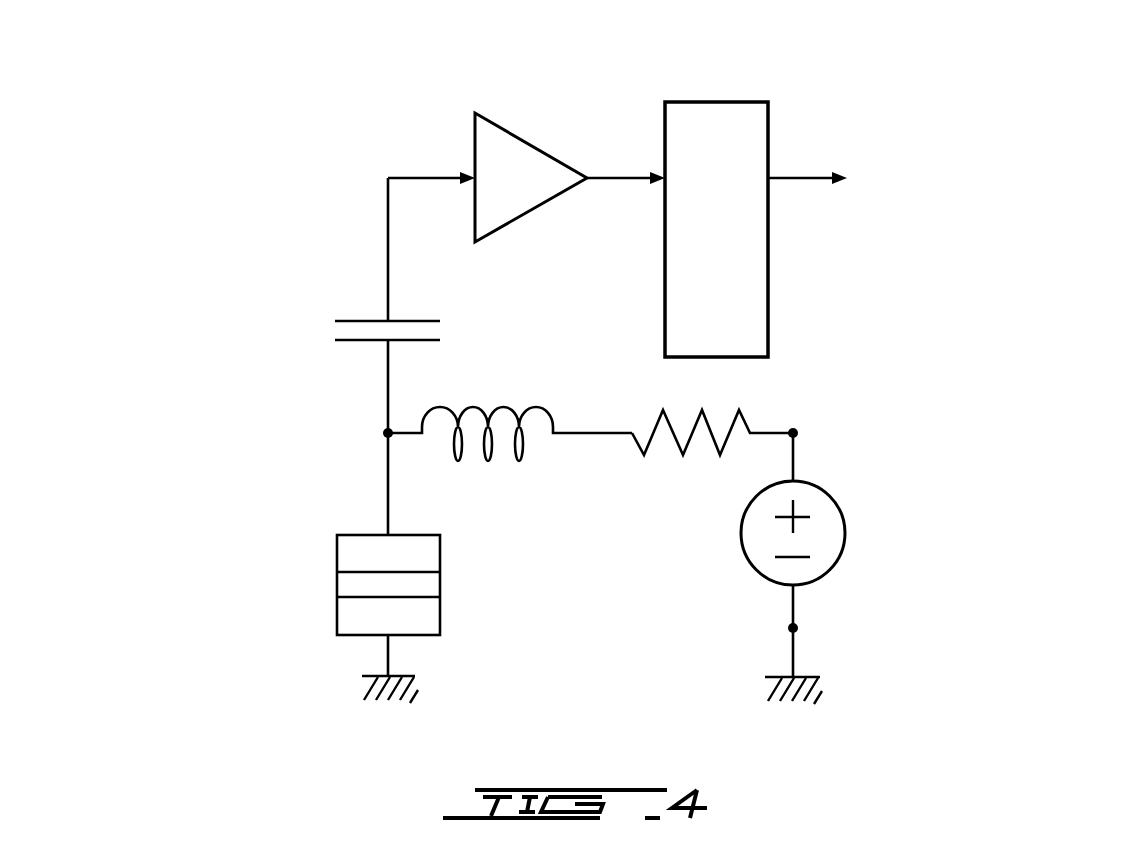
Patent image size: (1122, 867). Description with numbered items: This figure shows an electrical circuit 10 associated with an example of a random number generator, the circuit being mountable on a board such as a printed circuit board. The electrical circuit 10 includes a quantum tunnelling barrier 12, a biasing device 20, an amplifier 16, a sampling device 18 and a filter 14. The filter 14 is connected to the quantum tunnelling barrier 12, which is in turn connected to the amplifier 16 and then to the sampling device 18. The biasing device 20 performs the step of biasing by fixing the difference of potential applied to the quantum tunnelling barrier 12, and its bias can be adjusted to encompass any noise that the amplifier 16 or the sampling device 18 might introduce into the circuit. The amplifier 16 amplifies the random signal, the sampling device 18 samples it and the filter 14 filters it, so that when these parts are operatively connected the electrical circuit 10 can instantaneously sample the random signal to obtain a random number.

The electrical circuit 10 is at (975, 148).
The quantum tunnelling barrier 12 is at (372, 583).
The filter 14 is at (805, 390).
The amplifier 16 is at (531, 145).
The sampling device 18 is at (768, 282).
The biasing device 20 is at (868, 478).